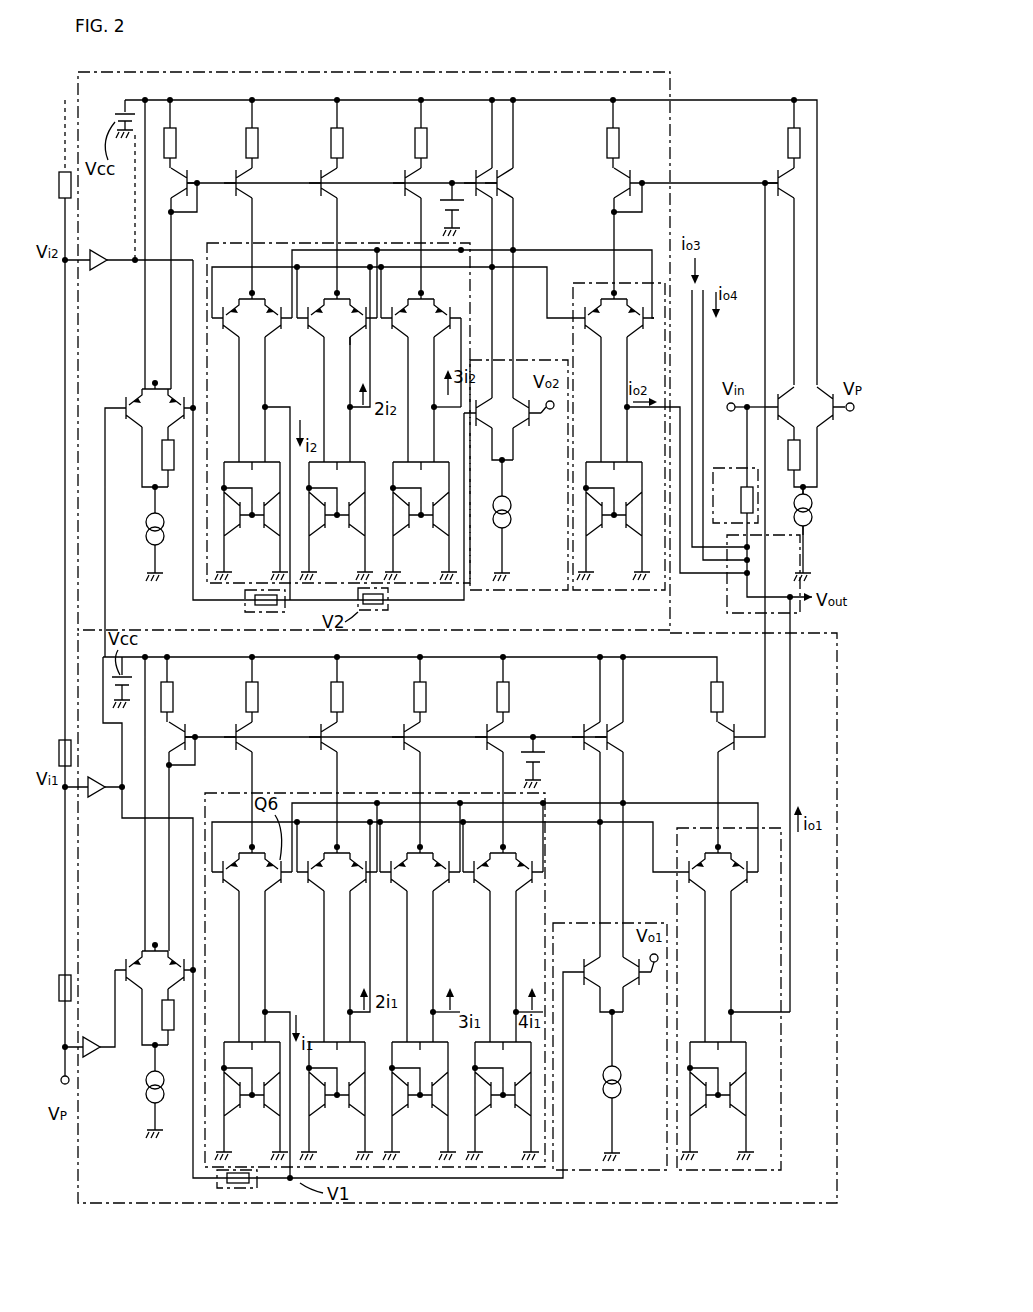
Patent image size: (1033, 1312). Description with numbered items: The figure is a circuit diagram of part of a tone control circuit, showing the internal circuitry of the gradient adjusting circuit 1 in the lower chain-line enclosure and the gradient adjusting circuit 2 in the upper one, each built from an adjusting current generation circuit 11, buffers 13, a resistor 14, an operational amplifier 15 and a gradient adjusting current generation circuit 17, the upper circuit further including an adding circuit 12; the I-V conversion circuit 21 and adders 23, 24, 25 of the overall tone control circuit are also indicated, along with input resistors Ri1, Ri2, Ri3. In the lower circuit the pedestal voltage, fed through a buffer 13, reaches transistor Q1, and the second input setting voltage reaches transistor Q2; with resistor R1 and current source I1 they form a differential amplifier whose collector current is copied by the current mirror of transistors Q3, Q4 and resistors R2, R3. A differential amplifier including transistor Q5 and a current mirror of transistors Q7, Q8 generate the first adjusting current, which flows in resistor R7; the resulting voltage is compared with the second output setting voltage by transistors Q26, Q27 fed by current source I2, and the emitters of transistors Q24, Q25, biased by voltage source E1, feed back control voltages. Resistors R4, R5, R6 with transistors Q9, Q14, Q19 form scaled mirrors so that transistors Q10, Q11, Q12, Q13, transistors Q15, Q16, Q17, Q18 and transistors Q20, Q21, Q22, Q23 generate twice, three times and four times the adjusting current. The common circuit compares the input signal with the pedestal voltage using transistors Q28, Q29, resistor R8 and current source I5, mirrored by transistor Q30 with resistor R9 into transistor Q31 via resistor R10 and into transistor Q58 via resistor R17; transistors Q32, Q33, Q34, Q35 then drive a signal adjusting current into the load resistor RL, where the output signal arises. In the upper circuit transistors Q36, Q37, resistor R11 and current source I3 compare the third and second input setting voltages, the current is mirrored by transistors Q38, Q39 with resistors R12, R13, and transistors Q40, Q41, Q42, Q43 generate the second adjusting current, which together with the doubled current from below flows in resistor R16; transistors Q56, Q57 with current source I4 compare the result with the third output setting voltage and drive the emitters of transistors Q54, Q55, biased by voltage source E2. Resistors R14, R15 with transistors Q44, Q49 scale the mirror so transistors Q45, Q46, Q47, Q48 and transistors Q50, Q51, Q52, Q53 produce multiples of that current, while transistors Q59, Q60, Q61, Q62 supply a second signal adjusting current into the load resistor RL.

The gradient adjusting circuit 1 is at (800, 640).
The gradient adjusting circuit 2 is at (672, 76).
The adjusting current generation circuit 11 is at (205, 585).
The adding circuit 12 is at (384, 606).
The buffer 13 is at (100, 275).
The resistor 14 is at (262, 612).
The operational amplifier 15 is at (512, 590).
The gradient adjusting current generation circuit 17 is at (615, 590).
The I-V conversion circuit 21 is at (807, 492).
The adder 23 is at (745, 593).
The adder 24 is at (726, 426).
The adder 25 is at (687, 490).
The resistor RL is at (742, 500).
The resistor Ri1 is at (59, 988).
The resistor Ri2 is at (59, 752).
The resistor Ri3 is at (59, 185).
The resistor R1 is at (175, 1025).
The resistor R2 is at (172, 695).
The resistor R3 is at (258, 697).
The resistor R4 is at (343, 695).
The resistor R5 is at (426, 697).
The resistor R6 is at (509, 697).
The resistor R7 is at (217, 1180).
The resistor R8 is at (800, 452).
The resistor R9 is at (788, 145).
The resistor R10 is at (723, 695).
The resistor R11 is at (175, 465).
The resistor R12 is at (173, 145).
The resistor R13 is at (265, 145).
The resistor R14 is at (350, 145).
The resistor R15 is at (436, 145).
The resistor R16 is at (255, 603).
The resistor R17 is at (627, 145).
The current source I1 is at (166, 1095).
The current source I2 is at (620, 1090).
The current source I3 is at (146, 530).
The current source I4 is at (493, 510).
The current source I5 is at (815, 518).
The voltage source E1 is at (538, 770).
The voltage source E2 is at (445, 215).
The transistor Q1 is at (125, 950).
The transistor Q2 is at (178, 950).
The transistor Q3 is at (188, 720).
The transistor Q4 is at (232, 733).
The transistor Q5 is at (224, 885).
The transistor Q7 is at (248, 1095).
The transistor Q8 is at (268, 1115).
The transistor Q9 is at (318, 732).
The transistor Q10 is at (308, 885).
The transistor Q11 is at (362, 912).
The transistor Q12 is at (333, 1095).
The transistor Q13 is at (353, 1115).
The transistor Q14 is at (408, 730).
The transistor Q15 is at (392, 888).
The transistor Q16 is at (448, 888).
The transistor Q17 is at (416, 1095).
The transistor Q18 is at (436, 1115).
The transistor Q19 is at (478, 745).
The transistor Q20 is at (475, 912).
The transistor Q21 is at (532, 885).
The transistor Q22 is at (499, 1095).
The transistor Q23 is at (519, 1115).
The transistor Q24 is at (578, 733).
The transistor Q25 is at (615, 740).
The transistor Q26 is at (585, 980).
The transistor Q27 is at (638, 982).
The transistor Q28 is at (835, 392).
The transistor Q29 is at (770, 395).
The transistor Q30 is at (775, 172).
The transistor Q31 is at (742, 755).
The transistor Q32 is at (688, 878).
The transistor Q33 is at (744, 885).
The transistor Q34 is at (714, 1095).
The transistor Q35 is at (730, 1110).
The transistor Q36 is at (128, 405).
The transistor Q37 is at (160, 395).
The transistor Q38 is at (188, 172).
The transistor Q39 is at (250, 193).
The transistor Q40 is at (230, 300).
The transistor Q41 is at (272, 335).
The transistor Q42 is at (248, 515).
The transistor Q43 is at (268, 535).
The transistor Q44 is at (318, 175).
The transistor Q45 is at (312, 300).
The transistor Q46 is at (360, 300).
The transistor Q47 is at (333, 515).
The transistor Q48 is at (353, 535).
The transistor Q49 is at (415, 195).
The transistor Q50 is at (352, 337).
The transistor Q51 is at (438, 337).
The transistor Q52 is at (417, 515).
The transistor Q53 is at (437, 535).
The transistor Q54 is at (473, 170).
The transistor Q55 is at (505, 185).
The transistor Q56 is at (495, 445).
The transistor Q57 is at (533, 430).
The transistor Q58 is at (652, 195).
The transistor Q59 is at (580, 330).
The transistor Q60 is at (640, 310).
The transistor Q61 is at (600, 512).
The transistor Q62 is at (626, 535).